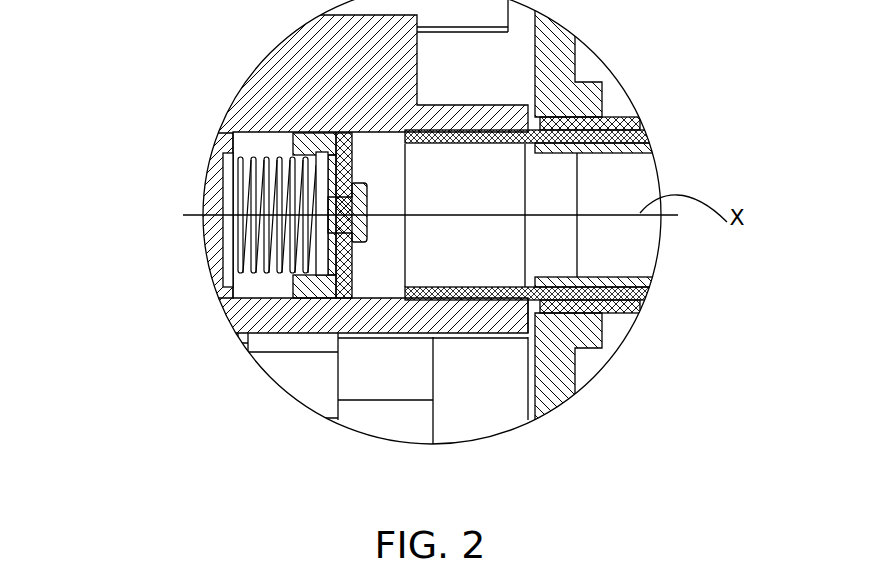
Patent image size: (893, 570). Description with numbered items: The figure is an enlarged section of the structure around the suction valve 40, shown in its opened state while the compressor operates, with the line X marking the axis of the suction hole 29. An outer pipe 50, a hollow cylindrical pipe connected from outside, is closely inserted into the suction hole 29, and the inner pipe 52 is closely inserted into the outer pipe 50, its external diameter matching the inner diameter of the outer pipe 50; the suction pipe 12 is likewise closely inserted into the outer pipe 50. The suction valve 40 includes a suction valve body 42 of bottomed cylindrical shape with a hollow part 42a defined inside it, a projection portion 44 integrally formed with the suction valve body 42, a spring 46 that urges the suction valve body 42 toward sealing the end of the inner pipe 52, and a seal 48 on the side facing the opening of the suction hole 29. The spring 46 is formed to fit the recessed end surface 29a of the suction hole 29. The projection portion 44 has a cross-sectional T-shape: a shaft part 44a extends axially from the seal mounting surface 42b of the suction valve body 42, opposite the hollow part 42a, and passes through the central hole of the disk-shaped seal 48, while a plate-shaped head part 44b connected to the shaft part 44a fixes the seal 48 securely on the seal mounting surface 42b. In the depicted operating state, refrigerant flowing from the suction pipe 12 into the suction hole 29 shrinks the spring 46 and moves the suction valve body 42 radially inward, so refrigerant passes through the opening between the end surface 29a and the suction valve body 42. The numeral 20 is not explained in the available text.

The suction pipe 12 is at (652, 284).
The housing 20 is at (238, 322).
The suction hole 29 is at (483, 242).
The end surface 29a is at (213, 278).
The suction valve 40 is at (25, 197).
The suction valve body 42 is at (226, 290).
The hollow part 42a is at (287, 265).
The seal mounting surface 42b is at (345, 296).
The projection portion 44 is at (237, 7).
The shaft part 44a is at (350, 150).
The head part 44b is at (367, 210).
The spring 46 is at (282, 147).
The seal 48 is at (323, 233).
The outer pipe 50 is at (608, 312).
The inner pipe 52 is at (455, 300).